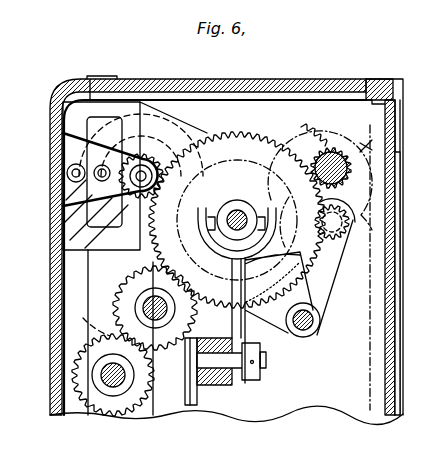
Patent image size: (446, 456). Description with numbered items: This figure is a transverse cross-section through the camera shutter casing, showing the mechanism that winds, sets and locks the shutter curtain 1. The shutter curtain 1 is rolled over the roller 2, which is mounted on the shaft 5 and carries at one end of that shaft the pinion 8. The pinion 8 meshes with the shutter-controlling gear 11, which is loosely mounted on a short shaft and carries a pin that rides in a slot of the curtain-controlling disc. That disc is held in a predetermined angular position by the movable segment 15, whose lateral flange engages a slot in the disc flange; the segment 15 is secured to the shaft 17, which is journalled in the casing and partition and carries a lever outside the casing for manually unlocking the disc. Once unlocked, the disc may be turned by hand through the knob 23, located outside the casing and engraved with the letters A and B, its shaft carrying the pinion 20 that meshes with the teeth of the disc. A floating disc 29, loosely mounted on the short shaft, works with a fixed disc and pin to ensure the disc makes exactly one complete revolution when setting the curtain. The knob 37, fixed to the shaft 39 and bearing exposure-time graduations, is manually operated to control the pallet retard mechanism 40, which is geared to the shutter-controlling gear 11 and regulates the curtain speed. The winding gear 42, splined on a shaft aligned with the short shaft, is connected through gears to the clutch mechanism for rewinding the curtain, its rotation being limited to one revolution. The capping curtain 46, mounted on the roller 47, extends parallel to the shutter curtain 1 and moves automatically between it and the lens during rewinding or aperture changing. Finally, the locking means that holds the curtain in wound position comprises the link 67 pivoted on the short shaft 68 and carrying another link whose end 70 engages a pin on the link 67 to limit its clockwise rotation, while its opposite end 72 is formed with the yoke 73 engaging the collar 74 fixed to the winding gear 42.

The shutter curtain 1 is at (398, 290).
The roller 2 is at (330, 149).
The shaft 5 is at (359, 149).
The pinion 8 is at (340, 158).
The shutter-controlling gear 11 is at (289, 145).
The movable segment 15 is at (283, 337).
The shaft 17 is at (316, 328).
The pinion 20 is at (352, 231).
The knob 23 is at (393, 188).
The floating disc 29 is at (265, 136).
The knob 37 is at (197, 114).
The shaft 39 is at (80, 233).
The pallet retard mechanism 40 is at (95, 135).
The winding gear 42 is at (240, 128).
The capping curtain 46 is at (110, 320).
The roller 47 is at (97, 290).
The link 67 is at (184, 388).
The short shaft 68 is at (247, 383).
The end 70 is at (200, 402).
The end 72 is at (232, 344).
The yoke 73 is at (191, 250).
The collar 74 is at (243, 199).